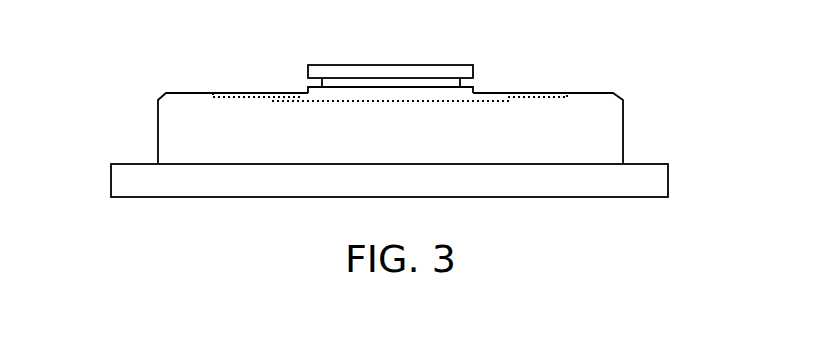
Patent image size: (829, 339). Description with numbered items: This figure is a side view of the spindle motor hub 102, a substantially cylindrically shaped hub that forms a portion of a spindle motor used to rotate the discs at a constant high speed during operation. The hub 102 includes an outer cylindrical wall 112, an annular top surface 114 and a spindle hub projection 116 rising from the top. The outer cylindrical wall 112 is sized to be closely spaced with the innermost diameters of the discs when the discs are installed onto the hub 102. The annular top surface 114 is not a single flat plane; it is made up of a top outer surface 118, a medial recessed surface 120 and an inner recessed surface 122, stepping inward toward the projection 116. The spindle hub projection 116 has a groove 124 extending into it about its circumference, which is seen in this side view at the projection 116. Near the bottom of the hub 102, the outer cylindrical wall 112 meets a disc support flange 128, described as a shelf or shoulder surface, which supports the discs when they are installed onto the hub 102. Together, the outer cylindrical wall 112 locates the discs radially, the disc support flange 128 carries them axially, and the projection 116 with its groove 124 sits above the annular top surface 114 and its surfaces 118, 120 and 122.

The spindle motor hub 102 is at (124, 35).
The outer cylindrical wall 112 is at (624, 124).
The annular top surface 114 is at (593, 78).
The spindle hub projection 116 is at (415, 65).
The top outer surface 118 is at (188, 93).
The medial recessed surface 120 is at (238, 93).
The inner recessed surface 122 is at (293, 93).
The groove 124 is at (487, 83).
The disc support flange 128 is at (645, 163).